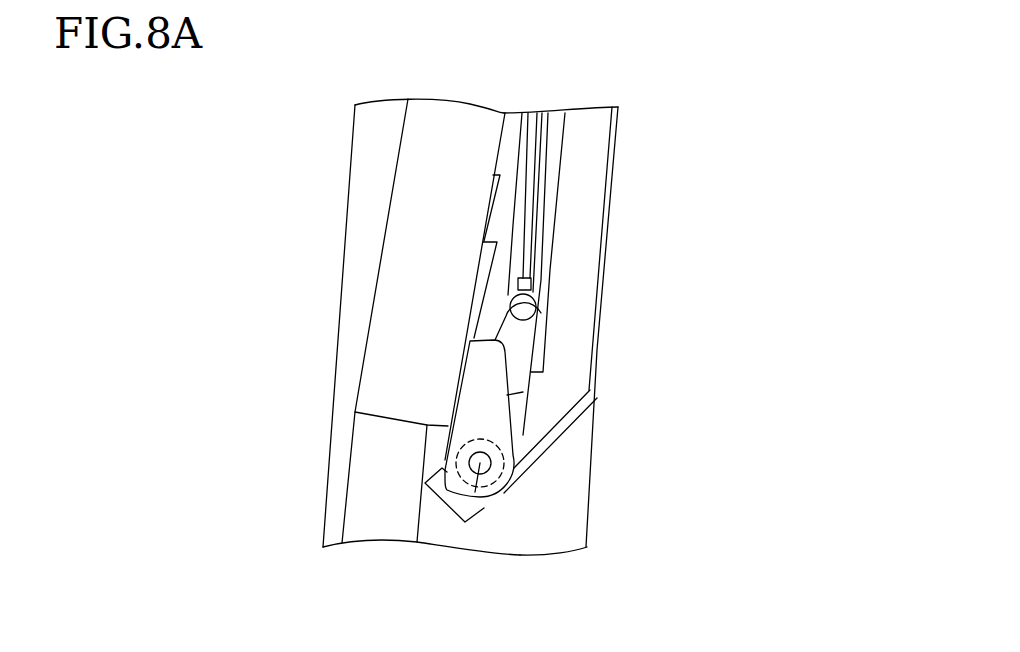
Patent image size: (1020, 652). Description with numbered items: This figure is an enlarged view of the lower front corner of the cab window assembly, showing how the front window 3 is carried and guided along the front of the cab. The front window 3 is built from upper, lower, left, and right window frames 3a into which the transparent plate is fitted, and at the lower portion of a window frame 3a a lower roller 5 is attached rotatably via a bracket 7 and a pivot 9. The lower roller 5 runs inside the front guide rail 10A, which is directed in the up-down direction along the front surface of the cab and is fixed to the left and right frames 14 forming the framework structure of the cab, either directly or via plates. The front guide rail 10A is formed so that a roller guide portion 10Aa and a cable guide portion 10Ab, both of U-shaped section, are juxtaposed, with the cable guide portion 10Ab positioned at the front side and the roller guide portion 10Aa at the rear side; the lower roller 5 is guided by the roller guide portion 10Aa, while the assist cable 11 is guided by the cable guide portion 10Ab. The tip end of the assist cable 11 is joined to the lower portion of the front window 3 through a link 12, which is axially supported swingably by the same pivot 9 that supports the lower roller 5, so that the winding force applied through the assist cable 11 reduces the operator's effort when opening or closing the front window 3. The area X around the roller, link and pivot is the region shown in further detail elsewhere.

The front window 3 is at (392, 186).
The window frame 3a is at (397, 293).
The lower roller 5 is at (498, 497).
The bracket 7 is at (492, 428).
The pivot 9 is at (452, 514).
The front guide rail 10A is at (619, 153).
The roller guide portion 10Aa is at (578, 243).
The cable guide portion 10Ab is at (537, 226).
The assist cable 11 is at (538, 148).
The link 12 is at (518, 365).
The frame 14 is at (563, 518).
The area X is at (748, 316).